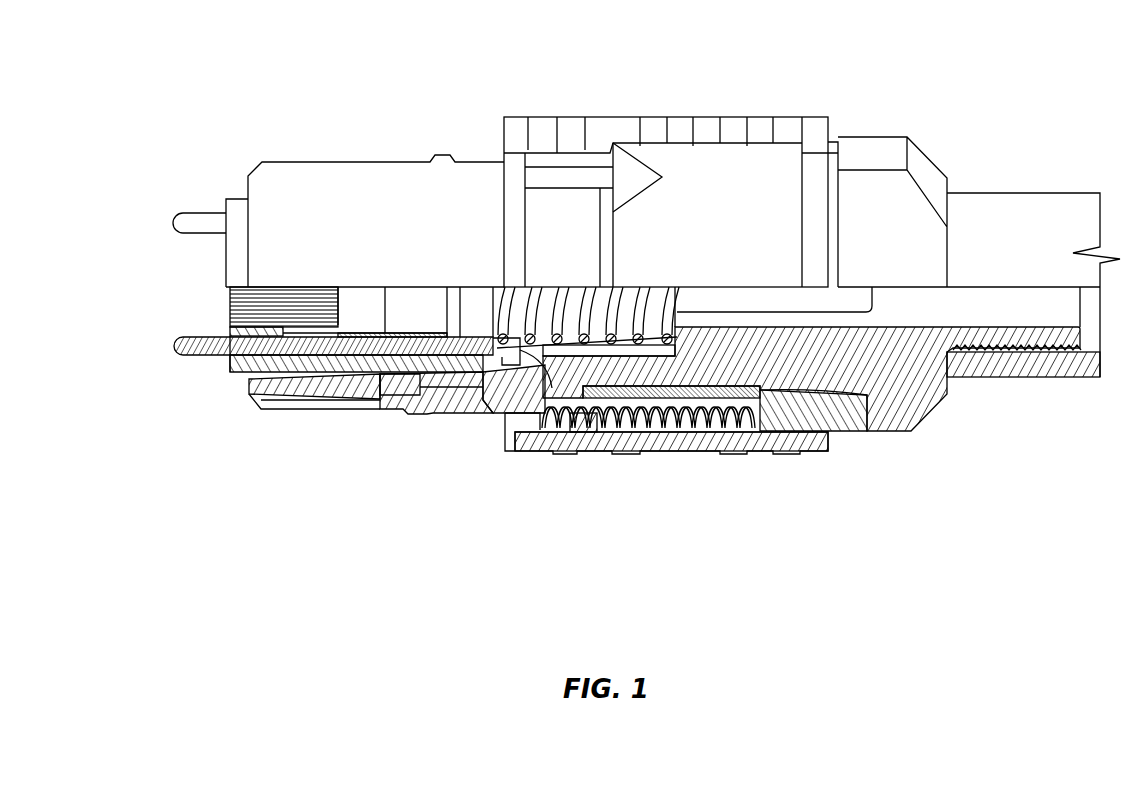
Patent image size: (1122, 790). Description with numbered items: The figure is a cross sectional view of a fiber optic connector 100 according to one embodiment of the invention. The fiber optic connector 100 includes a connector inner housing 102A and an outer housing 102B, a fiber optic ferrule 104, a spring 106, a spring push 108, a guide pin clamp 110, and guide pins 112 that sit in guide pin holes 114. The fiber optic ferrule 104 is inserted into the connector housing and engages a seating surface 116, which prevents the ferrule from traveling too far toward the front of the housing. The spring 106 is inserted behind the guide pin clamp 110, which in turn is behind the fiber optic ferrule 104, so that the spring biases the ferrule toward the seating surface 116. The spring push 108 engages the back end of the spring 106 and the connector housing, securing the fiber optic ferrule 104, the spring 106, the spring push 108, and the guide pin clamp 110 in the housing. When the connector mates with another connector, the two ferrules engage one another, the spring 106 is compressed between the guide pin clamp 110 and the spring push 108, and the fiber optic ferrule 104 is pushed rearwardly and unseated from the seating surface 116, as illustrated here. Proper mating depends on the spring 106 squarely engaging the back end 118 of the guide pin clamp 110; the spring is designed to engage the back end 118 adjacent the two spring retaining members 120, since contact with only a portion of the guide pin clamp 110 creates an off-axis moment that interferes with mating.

The fiber optic connector 100 is at (174, 78).
The connector inner housing 102A is at (333, 162).
The outer housing 102B is at (556, 117).
The fiber optic ferrule 104 is at (243, 374).
The spring 106 is at (637, 440).
The spring push 108 is at (893, 418).
The guide pin clamp 110 is at (487, 375).
The guide pins 112 is at (200, 360).
The guide pin holes 114 is at (313, 378).
The seating surface 116 is at (383, 382).
The back end of the guide pin clamp 118 is at (503, 290).
The spring retaining members 120 is at (554, 438).